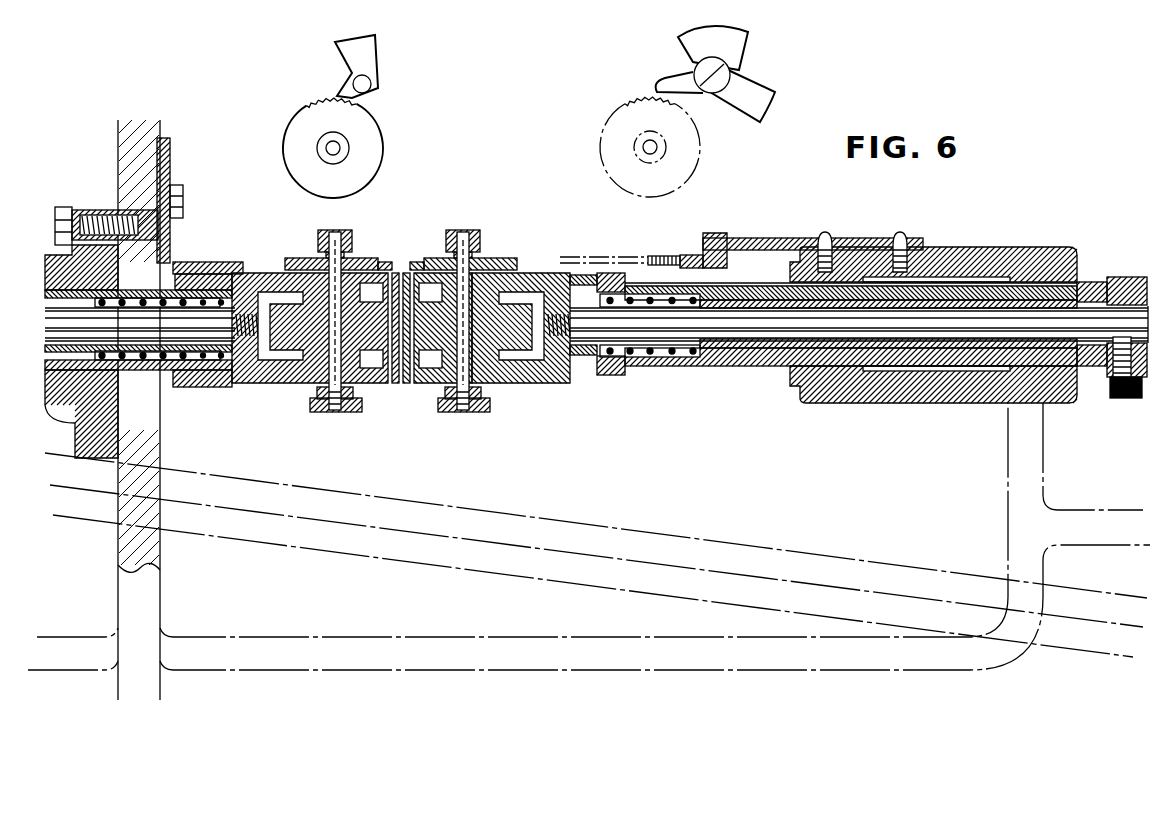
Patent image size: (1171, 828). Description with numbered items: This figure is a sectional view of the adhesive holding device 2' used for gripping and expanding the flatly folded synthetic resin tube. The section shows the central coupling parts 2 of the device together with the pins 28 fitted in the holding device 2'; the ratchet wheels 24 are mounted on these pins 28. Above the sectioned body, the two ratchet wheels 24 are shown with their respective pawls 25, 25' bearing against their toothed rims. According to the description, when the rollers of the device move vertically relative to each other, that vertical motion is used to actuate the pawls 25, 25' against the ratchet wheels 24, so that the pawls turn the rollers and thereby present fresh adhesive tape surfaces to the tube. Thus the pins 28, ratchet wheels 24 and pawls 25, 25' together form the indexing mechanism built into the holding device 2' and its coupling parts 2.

The coupling half 2 is at (422, 340).
The holding device 2' is at (401, 338).
The ratchet wheels 24 is at (374, 132).
The pawl 25 is at (721, 74).
The pawl 25' is at (380, 66).
The pins 28 is at (333, 228).